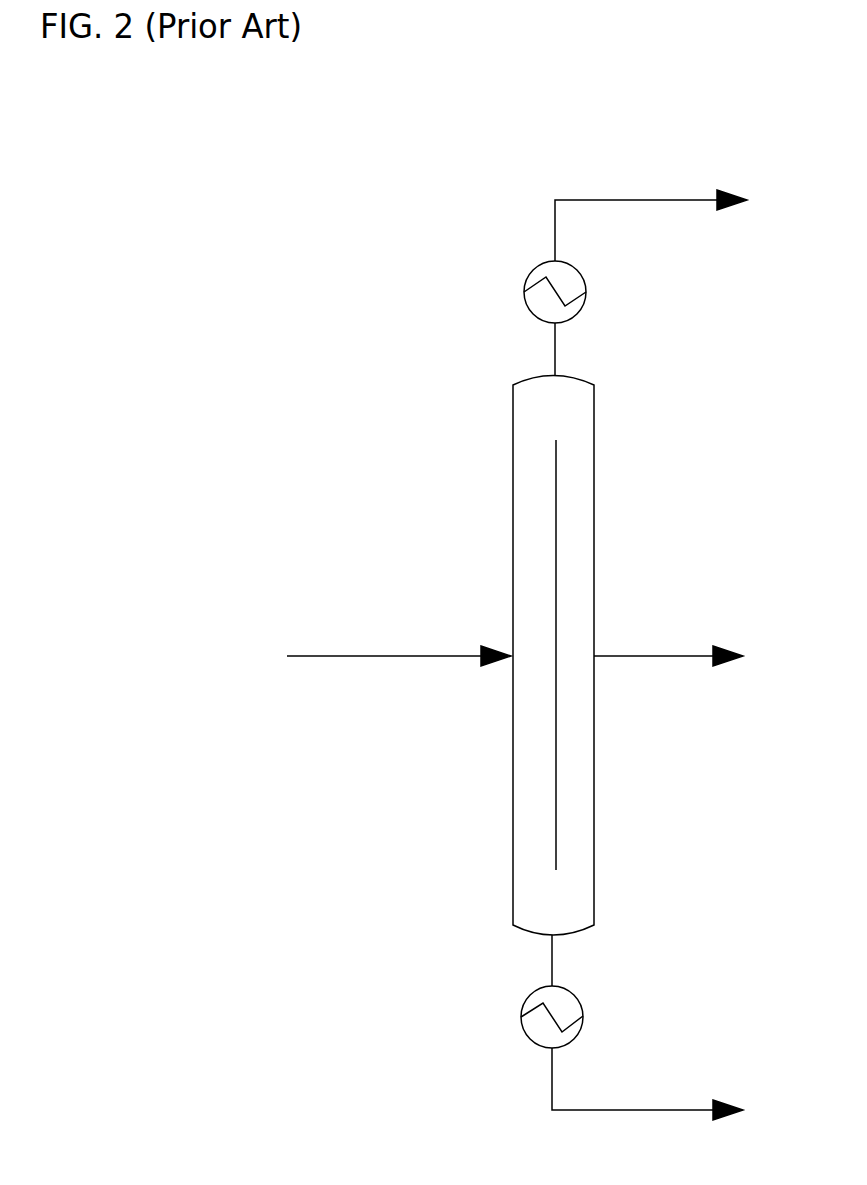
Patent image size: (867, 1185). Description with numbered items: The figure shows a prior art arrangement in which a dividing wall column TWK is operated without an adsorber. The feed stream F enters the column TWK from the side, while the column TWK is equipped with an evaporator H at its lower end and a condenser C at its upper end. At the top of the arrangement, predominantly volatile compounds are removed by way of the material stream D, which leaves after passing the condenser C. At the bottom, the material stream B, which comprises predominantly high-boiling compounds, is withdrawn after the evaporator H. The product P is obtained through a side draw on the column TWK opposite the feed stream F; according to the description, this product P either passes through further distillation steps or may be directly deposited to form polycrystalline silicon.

The dividing wall column TWK is at (597, 656).
The condenser C is at (578, 292).
The material stream D is at (651, 267).
The evaporator H is at (576, 1017).
The material stream B is at (647, 1027).
The feed stream F is at (399, 640).
The product P is at (675, 640).